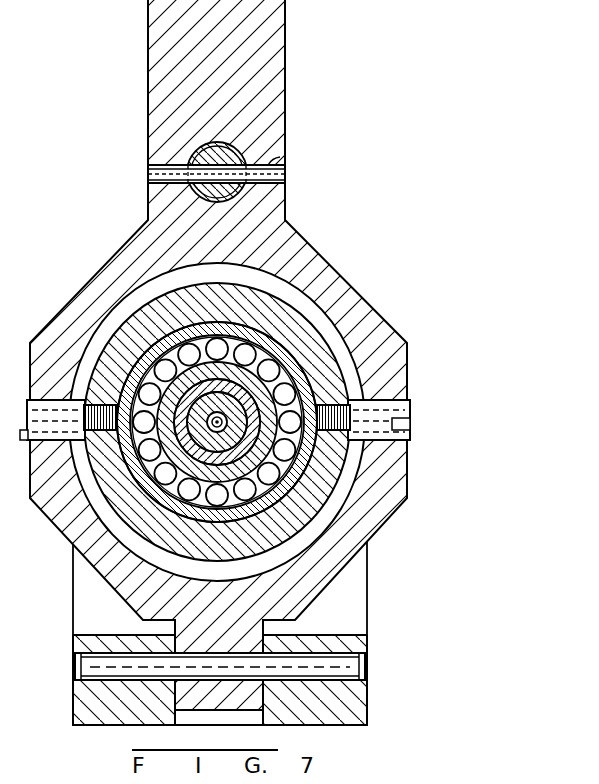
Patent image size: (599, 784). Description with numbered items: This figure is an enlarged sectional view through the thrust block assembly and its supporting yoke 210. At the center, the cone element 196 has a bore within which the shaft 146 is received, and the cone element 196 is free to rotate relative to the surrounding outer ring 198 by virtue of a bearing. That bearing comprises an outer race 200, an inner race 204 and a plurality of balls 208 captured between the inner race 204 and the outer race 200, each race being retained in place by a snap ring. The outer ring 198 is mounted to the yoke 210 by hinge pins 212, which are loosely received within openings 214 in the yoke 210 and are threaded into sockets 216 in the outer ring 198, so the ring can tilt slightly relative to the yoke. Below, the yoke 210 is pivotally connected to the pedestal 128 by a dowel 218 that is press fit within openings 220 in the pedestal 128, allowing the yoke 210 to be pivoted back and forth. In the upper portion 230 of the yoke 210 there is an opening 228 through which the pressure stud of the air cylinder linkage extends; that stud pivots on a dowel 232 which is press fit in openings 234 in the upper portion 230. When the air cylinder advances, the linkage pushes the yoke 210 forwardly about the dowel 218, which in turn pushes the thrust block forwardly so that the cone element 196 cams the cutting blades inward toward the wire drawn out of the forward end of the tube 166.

The pedestal 128 is at (113, 728).
The shaft 146 is at (232, 437).
The tube 166 is at (255, 372).
The cone element 196 is at (217, 497).
The outer ring 198 is at (252, 290).
The outer race 200 is at (180, 288).
The inner race 204 is at (197, 473).
The balls 208 is at (143, 457).
The yoke 210 is at (347, 300).
The hinge pins 212 is at (400, 405).
The openings 214 is at (24, 410).
The sockets 216 is at (110, 405).
The dowel 218 is at (364, 665).
The openings 220 is at (364, 678).
The opening 228 is at (222, 143).
The upper portion 230 is at (286, 28).
The dowel 232 is at (278, 165).
The openings 234 is at (160, 172).